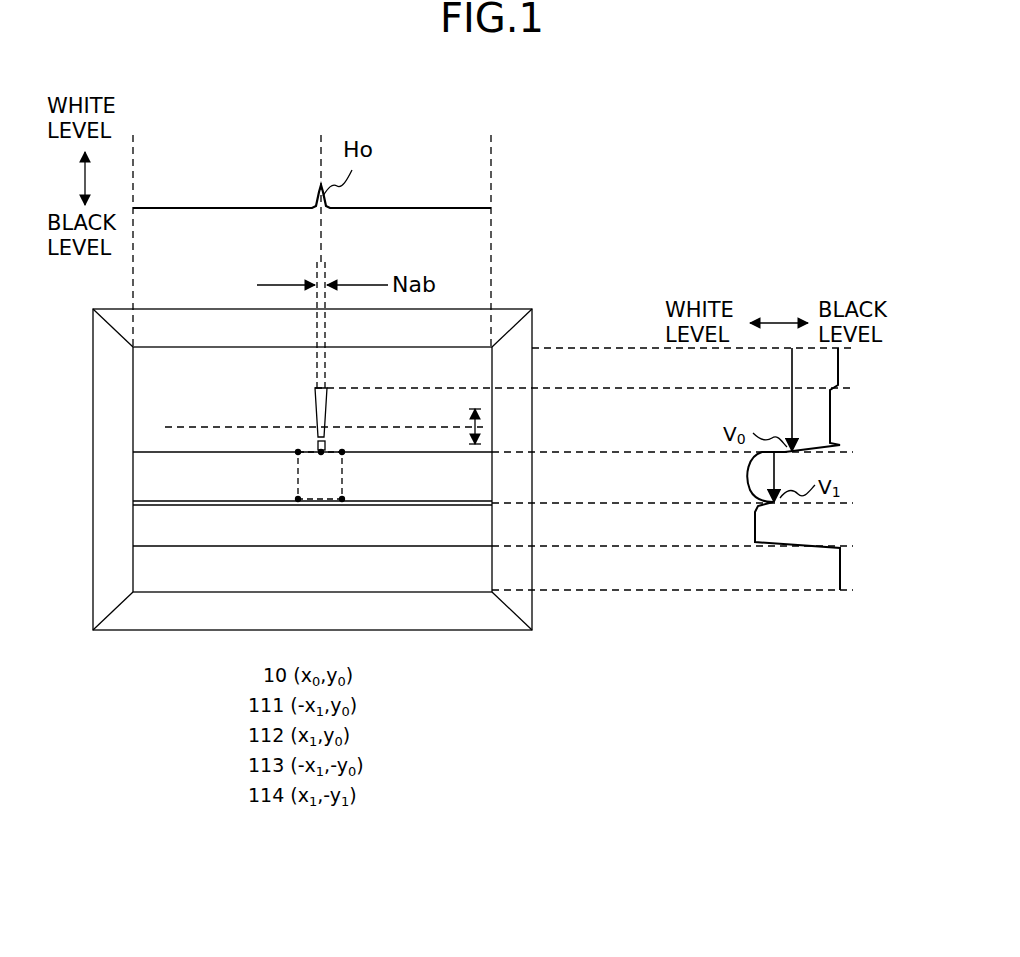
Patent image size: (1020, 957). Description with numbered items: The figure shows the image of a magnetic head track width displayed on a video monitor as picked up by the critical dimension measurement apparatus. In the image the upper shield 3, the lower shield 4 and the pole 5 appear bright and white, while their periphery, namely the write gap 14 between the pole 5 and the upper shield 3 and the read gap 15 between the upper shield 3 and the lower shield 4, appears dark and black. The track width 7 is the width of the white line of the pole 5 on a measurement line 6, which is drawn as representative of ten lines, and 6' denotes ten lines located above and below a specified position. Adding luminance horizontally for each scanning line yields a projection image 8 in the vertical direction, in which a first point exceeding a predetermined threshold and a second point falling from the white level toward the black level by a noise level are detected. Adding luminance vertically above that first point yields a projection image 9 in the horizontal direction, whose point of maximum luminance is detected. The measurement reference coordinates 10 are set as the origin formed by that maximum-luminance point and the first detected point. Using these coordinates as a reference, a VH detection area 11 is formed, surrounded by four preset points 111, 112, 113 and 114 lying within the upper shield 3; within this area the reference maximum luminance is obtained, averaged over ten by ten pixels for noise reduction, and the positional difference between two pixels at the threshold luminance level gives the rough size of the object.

The upper shield 3 is at (168, 478).
The lower shield 4 is at (168, 527).
The pole 5 is at (325, 390).
The measurement line 6 is at (584, 390).
The lines located above and below a specified position 6' is at (519, 420).
The track width 7 is at (286, 280).
The projection image in the vertical direction 8 is at (802, 545).
The projection image in the horizontal direction 9 is at (413, 208).
The measurement reference coordinates 10 is at (321, 451).
The VH detection area 11 is at (337, 475).
The write gap 14 is at (318, 446).
The read gap 15 is at (270, 502).
The point (-x1, y0) 111 is at (298, 451).
The point (x1, y0) 112 is at (343, 451).
The point (-x1, -y1) 113 is at (298, 500).
The point (x1, -y1) 114 is at (342, 500).